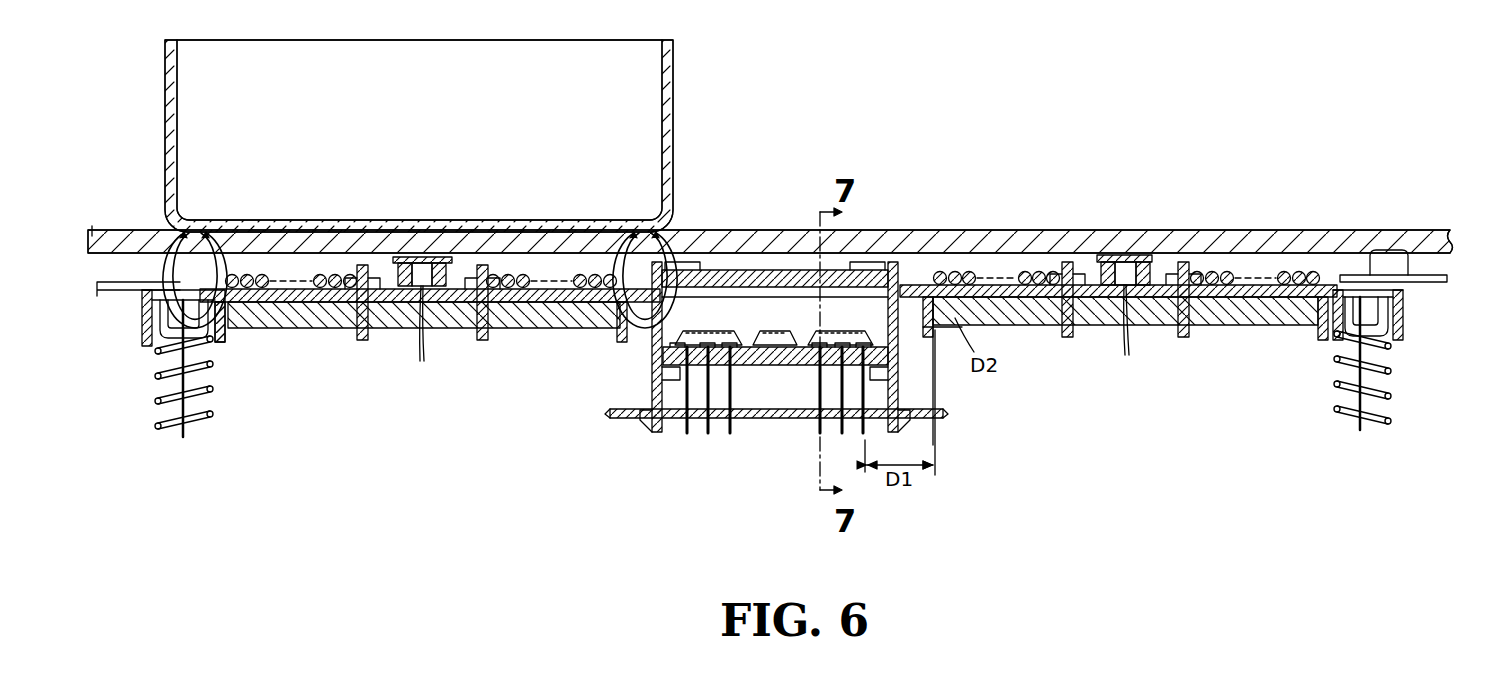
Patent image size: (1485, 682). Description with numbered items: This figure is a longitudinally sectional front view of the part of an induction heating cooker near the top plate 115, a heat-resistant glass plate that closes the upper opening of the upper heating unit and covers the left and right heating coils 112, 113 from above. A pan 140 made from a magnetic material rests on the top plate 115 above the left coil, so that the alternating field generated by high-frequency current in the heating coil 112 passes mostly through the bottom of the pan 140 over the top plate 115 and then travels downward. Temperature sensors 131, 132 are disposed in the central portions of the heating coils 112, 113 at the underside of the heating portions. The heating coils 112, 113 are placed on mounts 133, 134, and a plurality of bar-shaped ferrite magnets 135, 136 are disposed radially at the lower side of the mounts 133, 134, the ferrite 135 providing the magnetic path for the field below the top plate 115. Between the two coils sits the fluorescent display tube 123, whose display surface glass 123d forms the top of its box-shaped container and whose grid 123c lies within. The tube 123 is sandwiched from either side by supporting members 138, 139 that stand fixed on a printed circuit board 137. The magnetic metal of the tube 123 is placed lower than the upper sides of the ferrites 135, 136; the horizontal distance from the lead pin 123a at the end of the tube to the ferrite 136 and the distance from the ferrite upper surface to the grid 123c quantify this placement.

The pan 140 is at (673, 80).
The top plate 115 is at (967, 230).
The left heating coil 112 is at (325, 275).
The right heating coil 113 is at (1040, 272).
The temperature sensor 131 is at (421, 257).
The temperature sensor 132 is at (1125, 256).
The mount 133 is at (560, 275).
The mount 134 is at (1268, 287).
The ferrite magnet 135 is at (527, 318).
The ferrite magnet 136 is at (1030, 323).
The fluorescent display tube 123 is at (789, 337).
The display surface glass 123d is at (780, 270).
The grid 123c is at (768, 367).
The lead pin 123a is at (715, 398).
The printed circuit board 137 is at (780, 418).
The supporting member 138 is at (652, 372).
The supporting member 139 is at (895, 374).